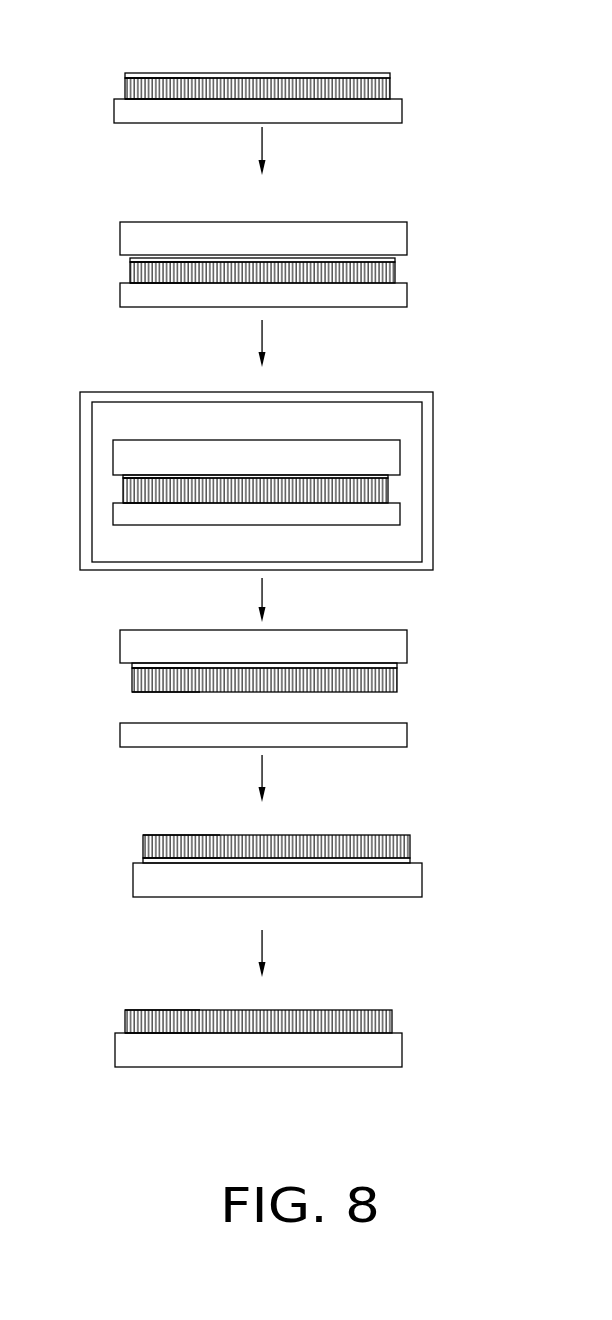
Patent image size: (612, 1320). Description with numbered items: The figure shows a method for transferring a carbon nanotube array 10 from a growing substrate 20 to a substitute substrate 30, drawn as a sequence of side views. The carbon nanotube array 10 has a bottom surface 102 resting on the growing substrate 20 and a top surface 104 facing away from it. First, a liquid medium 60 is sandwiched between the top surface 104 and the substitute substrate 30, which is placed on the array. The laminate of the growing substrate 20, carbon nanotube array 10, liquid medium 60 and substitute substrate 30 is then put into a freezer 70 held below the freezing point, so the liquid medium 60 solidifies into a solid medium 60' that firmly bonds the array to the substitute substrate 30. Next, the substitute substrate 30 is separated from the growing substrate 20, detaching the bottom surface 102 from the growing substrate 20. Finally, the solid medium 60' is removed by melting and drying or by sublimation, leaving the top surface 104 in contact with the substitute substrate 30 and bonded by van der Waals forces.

The carbon nanotube array 10 is at (387, 92).
The growing substrate 20 is at (390, 112).
The substitute substrate 30 is at (395, 232).
The liquid medium 60 is at (297, 150).
The solid medium 60' is at (315, 652).
The freezer 70 is at (433, 552).
The bottom surface 102 is at (147, 100).
The top surface 104 is at (149, 82).